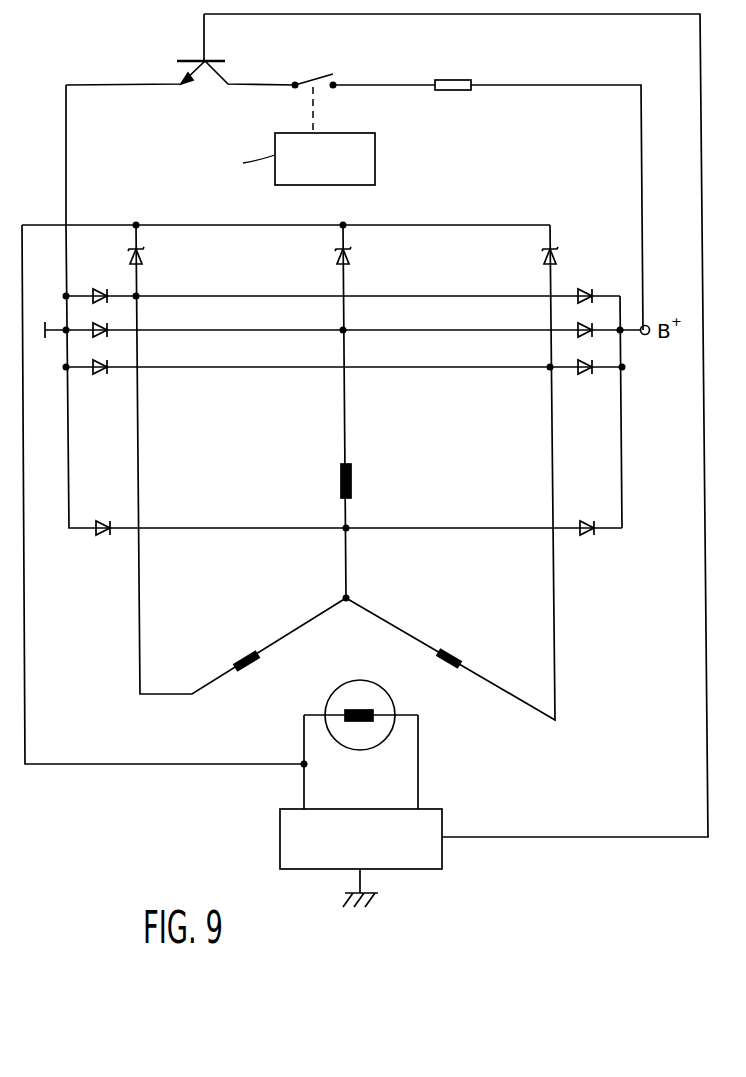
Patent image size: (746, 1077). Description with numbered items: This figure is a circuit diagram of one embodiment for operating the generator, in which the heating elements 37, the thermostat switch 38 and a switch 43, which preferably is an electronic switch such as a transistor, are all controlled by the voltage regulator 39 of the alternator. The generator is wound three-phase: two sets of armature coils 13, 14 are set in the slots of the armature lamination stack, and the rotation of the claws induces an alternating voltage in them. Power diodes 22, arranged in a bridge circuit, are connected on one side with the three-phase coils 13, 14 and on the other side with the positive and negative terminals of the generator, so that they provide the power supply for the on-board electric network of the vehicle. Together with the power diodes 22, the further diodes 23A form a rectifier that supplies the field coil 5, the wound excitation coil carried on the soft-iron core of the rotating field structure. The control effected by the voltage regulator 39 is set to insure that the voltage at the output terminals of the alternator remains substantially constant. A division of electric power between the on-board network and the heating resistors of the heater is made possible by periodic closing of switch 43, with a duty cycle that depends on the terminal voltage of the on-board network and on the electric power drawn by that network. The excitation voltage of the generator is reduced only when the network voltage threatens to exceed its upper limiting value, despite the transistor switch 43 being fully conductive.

The switch 43 is at (203, 61).
The thermostat switch 38 is at (375, 162).
The heating elements 37 is at (460, 91).
The diodes 23A is at (141, 249).
The power diodes 22 is at (95, 292).
The armature coils 13 is at (352, 559).
The armature coils 14 is at (360, 458).
The field coil 5 is at (370, 750).
The voltage regulator 39 is at (421, 868).